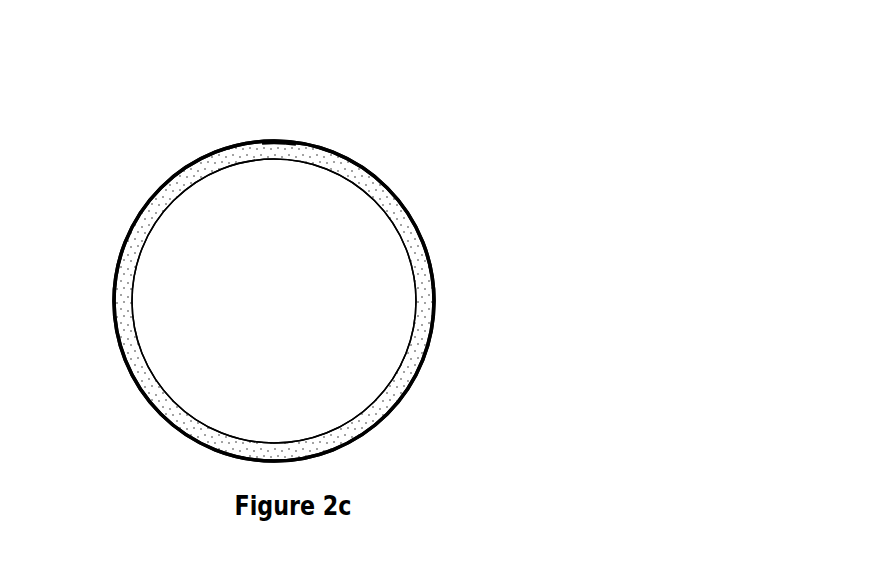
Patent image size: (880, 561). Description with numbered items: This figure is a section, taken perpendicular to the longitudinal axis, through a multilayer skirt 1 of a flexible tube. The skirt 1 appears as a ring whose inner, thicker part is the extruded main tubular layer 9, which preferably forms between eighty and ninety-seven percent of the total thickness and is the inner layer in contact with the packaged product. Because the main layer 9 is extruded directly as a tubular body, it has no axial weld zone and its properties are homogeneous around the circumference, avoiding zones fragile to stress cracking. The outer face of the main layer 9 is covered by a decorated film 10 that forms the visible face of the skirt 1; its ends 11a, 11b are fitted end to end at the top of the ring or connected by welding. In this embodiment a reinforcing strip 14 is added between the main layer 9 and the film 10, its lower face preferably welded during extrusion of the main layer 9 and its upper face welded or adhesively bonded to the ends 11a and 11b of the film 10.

The multilayer skirt 1 is at (116, 174).
The main tubular layer 9 is at (404, 251).
The decorated film 10 is at (428, 342).
The end of the decorated film 11a is at (260, 140).
The end of the decorated film 11b is at (292, 140).
The reinforcing strip 14 is at (275, 148).